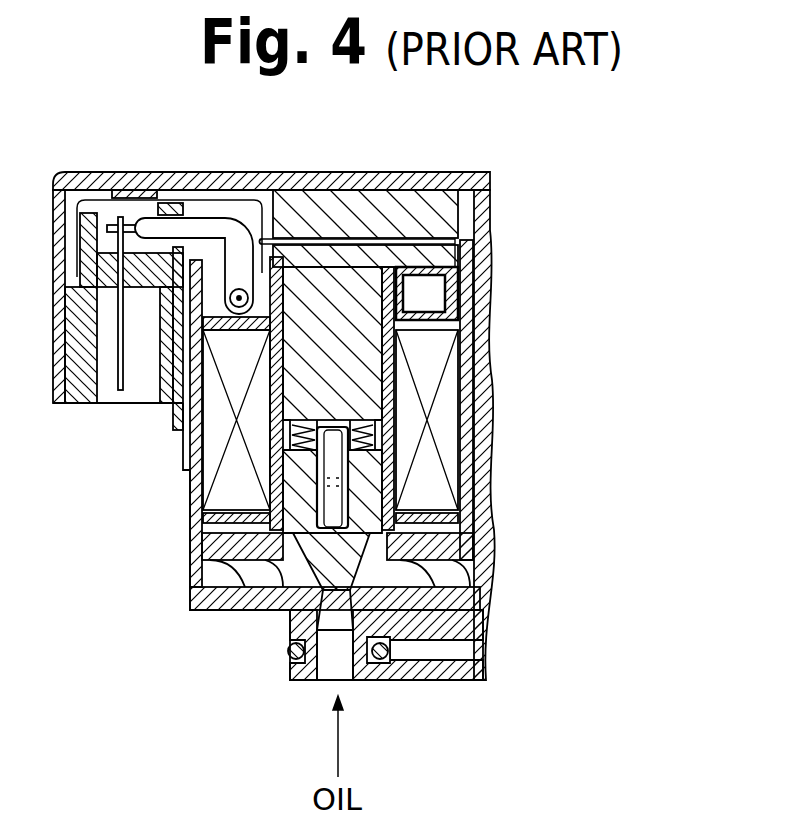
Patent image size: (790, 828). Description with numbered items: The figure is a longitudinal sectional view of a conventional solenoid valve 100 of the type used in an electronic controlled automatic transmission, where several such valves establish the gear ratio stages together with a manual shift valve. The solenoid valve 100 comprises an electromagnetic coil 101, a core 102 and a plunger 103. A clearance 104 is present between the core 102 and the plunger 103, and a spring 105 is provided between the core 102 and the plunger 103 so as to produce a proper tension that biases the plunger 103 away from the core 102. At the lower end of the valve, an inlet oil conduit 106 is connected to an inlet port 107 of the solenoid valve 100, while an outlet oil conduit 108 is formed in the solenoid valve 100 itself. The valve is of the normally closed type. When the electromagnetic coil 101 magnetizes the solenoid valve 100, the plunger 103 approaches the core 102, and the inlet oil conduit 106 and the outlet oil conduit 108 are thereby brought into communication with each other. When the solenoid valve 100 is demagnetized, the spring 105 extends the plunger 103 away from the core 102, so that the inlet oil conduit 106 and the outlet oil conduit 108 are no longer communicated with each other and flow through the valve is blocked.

The solenoid valve 100 is at (505, 258).
The electromagnetic coil 101 is at (437, 353).
The core 102 is at (353, 313).
The plunger 103 is at (353, 550).
The clearance 104 is at (363, 453).
The spring 105 is at (363, 488).
The inlet oil conduit 106 is at (353, 667).
The inlet port 107 is at (323, 670).
The outlet oil conduit 108 is at (238, 613).